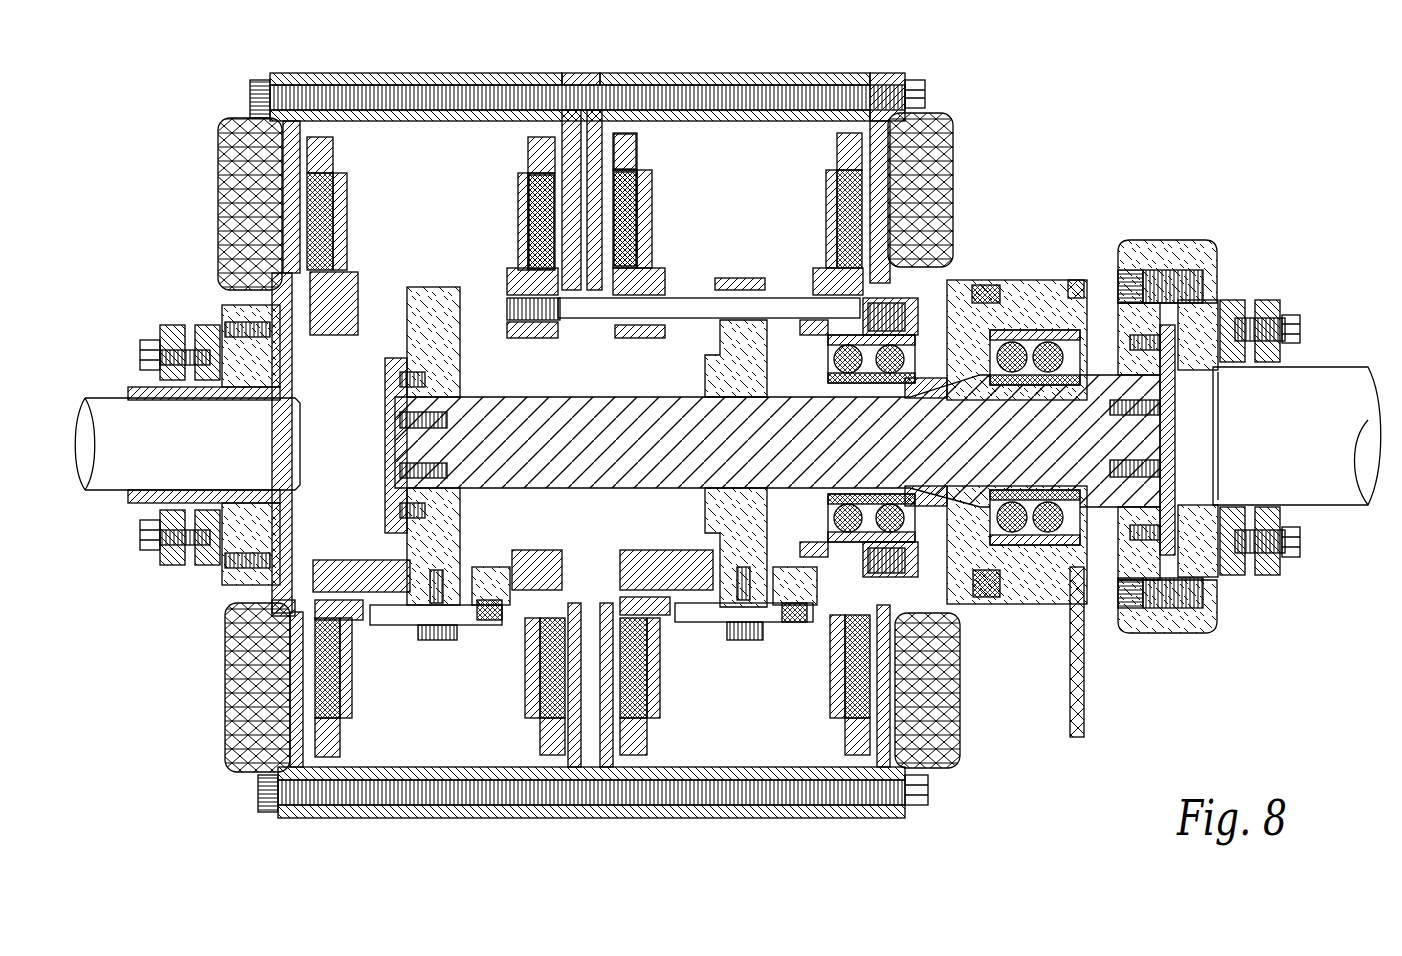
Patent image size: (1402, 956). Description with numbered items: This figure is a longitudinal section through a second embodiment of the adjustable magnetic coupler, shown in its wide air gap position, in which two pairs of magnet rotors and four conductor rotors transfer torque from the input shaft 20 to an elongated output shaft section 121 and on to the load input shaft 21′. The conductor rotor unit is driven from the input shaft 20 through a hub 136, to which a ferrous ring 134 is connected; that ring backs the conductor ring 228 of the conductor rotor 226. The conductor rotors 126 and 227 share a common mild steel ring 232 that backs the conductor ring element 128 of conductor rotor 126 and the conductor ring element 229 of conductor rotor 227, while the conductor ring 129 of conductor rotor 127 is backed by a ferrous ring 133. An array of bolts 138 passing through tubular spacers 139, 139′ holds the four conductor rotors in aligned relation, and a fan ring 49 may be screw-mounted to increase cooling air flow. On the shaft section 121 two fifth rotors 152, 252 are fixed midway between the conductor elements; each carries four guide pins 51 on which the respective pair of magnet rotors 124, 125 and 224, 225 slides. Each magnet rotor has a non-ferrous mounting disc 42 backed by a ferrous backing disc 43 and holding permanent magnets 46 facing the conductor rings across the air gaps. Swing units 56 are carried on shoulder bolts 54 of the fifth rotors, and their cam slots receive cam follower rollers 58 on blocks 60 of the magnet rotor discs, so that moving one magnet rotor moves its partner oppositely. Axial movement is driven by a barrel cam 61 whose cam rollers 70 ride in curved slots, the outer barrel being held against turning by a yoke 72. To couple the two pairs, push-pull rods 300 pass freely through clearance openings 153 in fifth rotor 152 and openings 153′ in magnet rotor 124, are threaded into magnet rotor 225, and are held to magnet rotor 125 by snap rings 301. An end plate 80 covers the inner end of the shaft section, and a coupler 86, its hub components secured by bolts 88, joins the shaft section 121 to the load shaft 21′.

The input shaft 20 is at (118, 415).
The input shaft of the load 21′ is at (1330, 367).
The mounting disc 42 is at (630, 157).
The backing disc 43 is at (648, 178).
The permanent magnets 46 is at (525, 178).
The fan ring 49 is at (955, 146).
The guide pins 51 is at (385, 562).
The shoulder bolts 54 is at (752, 640).
The swing units 56 is at (698, 622).
The cam follower roller 58 is at (793, 622).
The block 60 is at (800, 570).
The barrel cam 61 is at (1018, 278).
The cam rollers 70 is at (980, 283).
The yoke 72 is at (1085, 692).
The end plate 80 is at (383, 430).
The coupler 86 is at (1172, 240).
The bolts 88 is at (1252, 300).
The shaft section 121 is at (592, 408).
The magnet rotor 124 is at (660, 222).
The magnet rotor 125 is at (813, 227).
The conductor rotor 126 is at (612, 127).
The conductor rotor 127 is at (863, 125).
The conductor ring element 128 is at (605, 75).
The conductor ring 129 is at (872, 73).
The ferrous ring 133 is at (907, 80).
The ferrous ring 134 is at (283, 73).
The hub 136 is at (303, 510).
The bolts 138 is at (790, 88).
The tubular spacer 139 is at (733, 73).
The tubular spacer 139′ is at (403, 73).
The fifth rotor 152 is at (703, 378).
The clearance openings 153 is at (763, 295).
The openings 153′ is at (665, 293).
The magnet rotor 224 is at (350, 254).
The magnet rotor 225 is at (513, 245).
The conductor rotor 226 is at (305, 128).
The conductor rotor 227 is at (560, 128).
The conductor ring 228 is at (296, 75).
The conductor ring element 229 is at (565, 73).
The mild steel ring 232 is at (590, 73).
The fifth rotor 252 is at (460, 377).
The push-pull rods 300 is at (790, 320).
The snap rings 301 is at (885, 298).